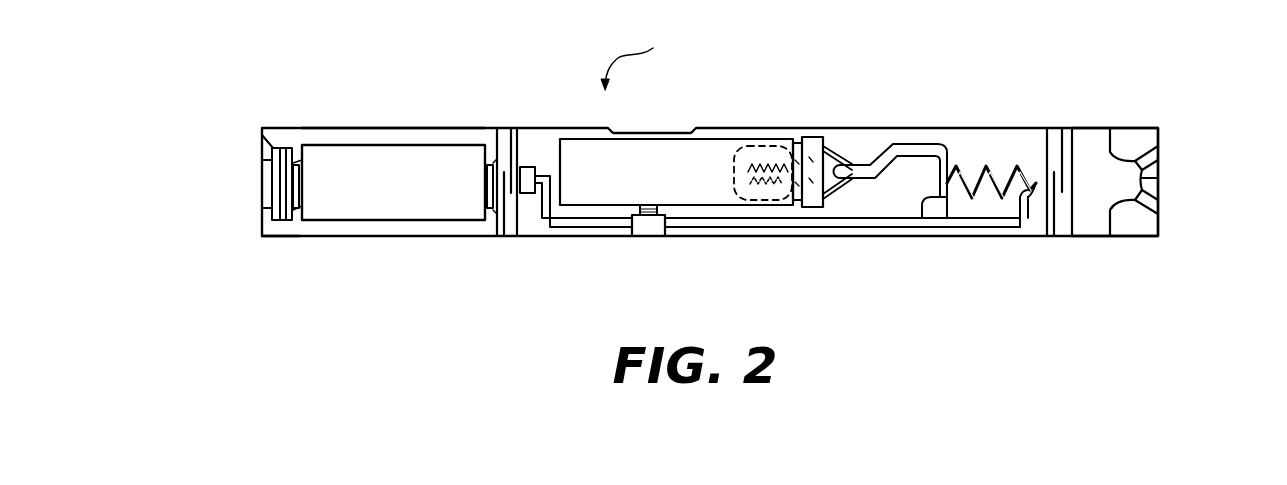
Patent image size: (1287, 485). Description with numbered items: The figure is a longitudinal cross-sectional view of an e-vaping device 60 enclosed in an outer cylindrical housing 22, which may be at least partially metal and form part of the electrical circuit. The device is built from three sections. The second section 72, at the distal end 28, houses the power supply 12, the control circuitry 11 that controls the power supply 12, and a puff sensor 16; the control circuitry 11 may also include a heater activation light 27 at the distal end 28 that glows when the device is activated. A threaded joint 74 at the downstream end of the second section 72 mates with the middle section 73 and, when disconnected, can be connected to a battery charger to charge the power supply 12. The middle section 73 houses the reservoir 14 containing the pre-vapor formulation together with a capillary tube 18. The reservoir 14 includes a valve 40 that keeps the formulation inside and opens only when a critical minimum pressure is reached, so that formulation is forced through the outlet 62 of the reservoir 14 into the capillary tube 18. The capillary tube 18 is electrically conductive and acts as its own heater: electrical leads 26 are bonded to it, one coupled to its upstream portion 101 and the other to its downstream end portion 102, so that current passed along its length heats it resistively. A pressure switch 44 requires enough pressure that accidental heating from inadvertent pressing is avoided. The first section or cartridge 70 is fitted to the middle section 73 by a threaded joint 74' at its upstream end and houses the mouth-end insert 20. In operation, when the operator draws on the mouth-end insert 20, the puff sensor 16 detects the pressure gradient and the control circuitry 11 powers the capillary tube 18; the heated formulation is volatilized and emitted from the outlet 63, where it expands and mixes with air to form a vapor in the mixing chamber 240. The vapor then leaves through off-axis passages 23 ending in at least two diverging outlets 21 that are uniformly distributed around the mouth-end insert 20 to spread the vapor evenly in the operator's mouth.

The e-vaping device 60 is at (634, 53).
The outer cylindrical housing 22 is at (727, 128).
The second section 72 is at (387, 128).
The puff sensor 16 is at (262, 135).
The heater activation light 27 is at (265, 175).
The distal end 28 is at (263, 230).
The control circuitry 11 is at (287, 221).
The power supply 12 is at (318, 143).
The threaded joint 74 is at (497, 139).
The pressure switch 44 is at (650, 204).
The reservoir 14 is at (673, 155).
The valve 40 is at (766, 180).
The middle section 73 is at (826, 135).
The outlet 62 is at (858, 152).
The upstream portion 101 is at (927, 219).
The capillary tube 18 is at (985, 162).
The outlet 63 is at (1038, 178).
The end portion 102 is at (1036, 210).
The electrical leads 26 is at (847, 219).
The threaded joint 74' is at (1067, 139).
The first section or cartridge 70 is at (1102, 236).
The mixing chamber 240 is at (1085, 214).
The off-axis passages 23 is at (1148, 153).
The diverging outlets 21 is at (1160, 148).
The mouth-end insert 20 is at (1160, 178).